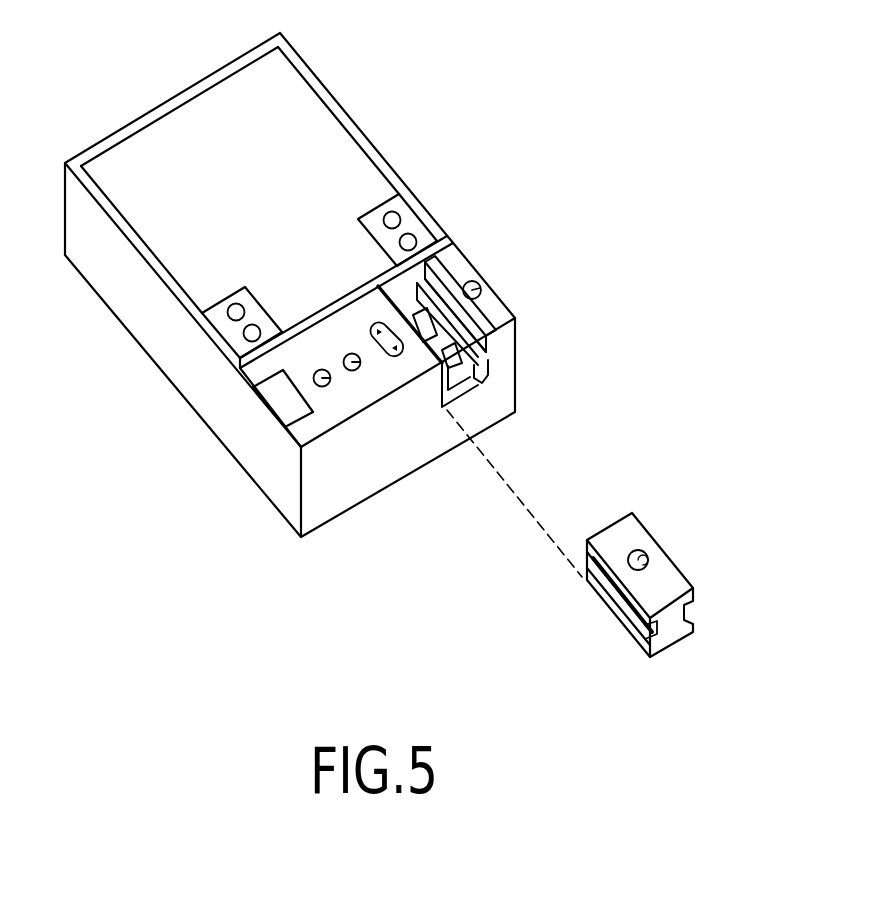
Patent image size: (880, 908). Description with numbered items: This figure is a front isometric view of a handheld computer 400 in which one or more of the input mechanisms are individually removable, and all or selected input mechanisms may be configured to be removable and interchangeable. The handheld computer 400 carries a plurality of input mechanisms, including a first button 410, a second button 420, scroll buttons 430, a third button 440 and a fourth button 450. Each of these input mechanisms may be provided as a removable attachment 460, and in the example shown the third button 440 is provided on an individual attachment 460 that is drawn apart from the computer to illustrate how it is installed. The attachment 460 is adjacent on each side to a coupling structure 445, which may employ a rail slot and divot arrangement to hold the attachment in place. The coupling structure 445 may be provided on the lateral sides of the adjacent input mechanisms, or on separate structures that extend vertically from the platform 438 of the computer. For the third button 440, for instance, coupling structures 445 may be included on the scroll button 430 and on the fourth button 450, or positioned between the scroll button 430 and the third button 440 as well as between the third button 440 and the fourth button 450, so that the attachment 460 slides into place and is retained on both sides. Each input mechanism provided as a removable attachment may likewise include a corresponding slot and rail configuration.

The handheld computer 400 is at (145, 55).
The first button 410 is at (331, 381).
The second button 420 is at (361, 364).
The scroll buttons 430 is at (432, 363).
The platform 438 is at (474, 382).
The third button 440 is at (612, 594).
The coupling structure 445 is at (481, 385).
The fourth button 450 is at (481, 284).
The removable attachment 460 is at (695, 525).